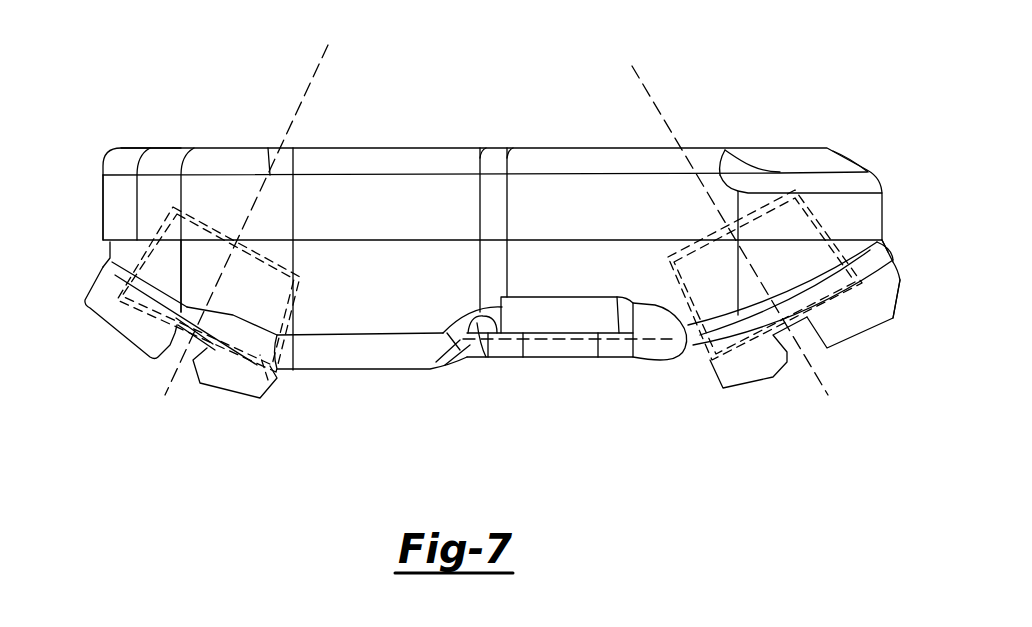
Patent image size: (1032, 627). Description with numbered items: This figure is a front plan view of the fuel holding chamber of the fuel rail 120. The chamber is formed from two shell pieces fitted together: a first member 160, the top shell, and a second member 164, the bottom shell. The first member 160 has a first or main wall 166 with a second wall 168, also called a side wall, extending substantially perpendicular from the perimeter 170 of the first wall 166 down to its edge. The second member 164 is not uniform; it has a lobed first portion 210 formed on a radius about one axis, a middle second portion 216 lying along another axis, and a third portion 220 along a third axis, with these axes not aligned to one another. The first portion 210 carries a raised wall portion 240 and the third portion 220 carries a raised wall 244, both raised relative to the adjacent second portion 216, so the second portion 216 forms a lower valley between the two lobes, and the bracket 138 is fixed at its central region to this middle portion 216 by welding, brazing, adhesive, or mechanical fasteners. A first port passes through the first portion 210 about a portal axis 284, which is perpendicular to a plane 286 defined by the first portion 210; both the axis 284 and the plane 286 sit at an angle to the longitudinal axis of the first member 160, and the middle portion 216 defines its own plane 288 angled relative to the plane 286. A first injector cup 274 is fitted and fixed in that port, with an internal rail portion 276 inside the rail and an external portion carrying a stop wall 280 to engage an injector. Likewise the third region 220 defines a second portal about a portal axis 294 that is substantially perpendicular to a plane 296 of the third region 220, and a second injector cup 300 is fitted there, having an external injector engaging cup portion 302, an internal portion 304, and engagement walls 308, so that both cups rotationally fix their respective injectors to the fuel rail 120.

The fuel rail 120 is at (153, 493).
The bracket 138 is at (594, 458).
The first member 160 is at (140, 40).
The second member 164 is at (380, 437).
The first wall 166 is at (268, 150).
The second wall 168 is at (145, 220).
The perimeter 170 is at (120, 163).
The first portion 210 is at (349, 372).
The second portion 216 is at (465, 352).
The third portion 220 is at (700, 352).
The raised wall portion 240 is at (467, 352).
The raised wall 244 is at (680, 345).
The first injector cup 274 is at (88, 400).
The internal rail portion 276 is at (162, 221).
The stop wall 280 is at (192, 356).
The portal axis 284 is at (300, 130).
The plane 286 is at (268, 380).
The plane 288 is at (533, 345).
The portal axis 294 is at (667, 132).
The plane 296 is at (897, 253).
The second injector cup 300 is at (880, 397).
The external cup portion 302 is at (888, 253).
The internal portion 304 is at (738, 205).
The engagement walls 308 is at (787, 365).